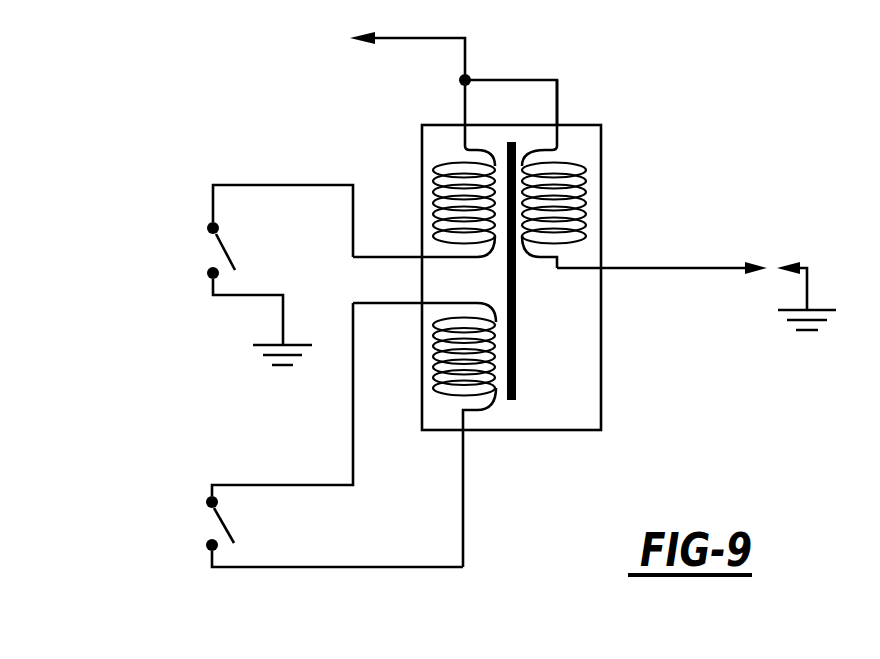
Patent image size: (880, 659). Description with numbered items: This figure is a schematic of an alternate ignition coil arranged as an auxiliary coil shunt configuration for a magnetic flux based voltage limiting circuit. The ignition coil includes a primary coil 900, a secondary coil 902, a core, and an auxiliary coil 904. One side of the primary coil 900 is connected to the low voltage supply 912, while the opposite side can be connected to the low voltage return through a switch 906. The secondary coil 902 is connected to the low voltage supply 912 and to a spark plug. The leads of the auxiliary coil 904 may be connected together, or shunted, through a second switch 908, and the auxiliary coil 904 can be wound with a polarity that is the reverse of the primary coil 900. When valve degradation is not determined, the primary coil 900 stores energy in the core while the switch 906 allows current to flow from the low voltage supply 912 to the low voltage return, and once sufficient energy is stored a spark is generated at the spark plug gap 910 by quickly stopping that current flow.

The primary coil 900 is at (458, 164).
The secondary coil 902 is at (578, 162).
The auxiliary coil 904 is at (440, 402).
The switch 906 is at (210, 252).
The switch 908 is at (207, 526).
The spark plug gap 910 is at (768, 283).
The low voltage supply 912 is at (431, 74).